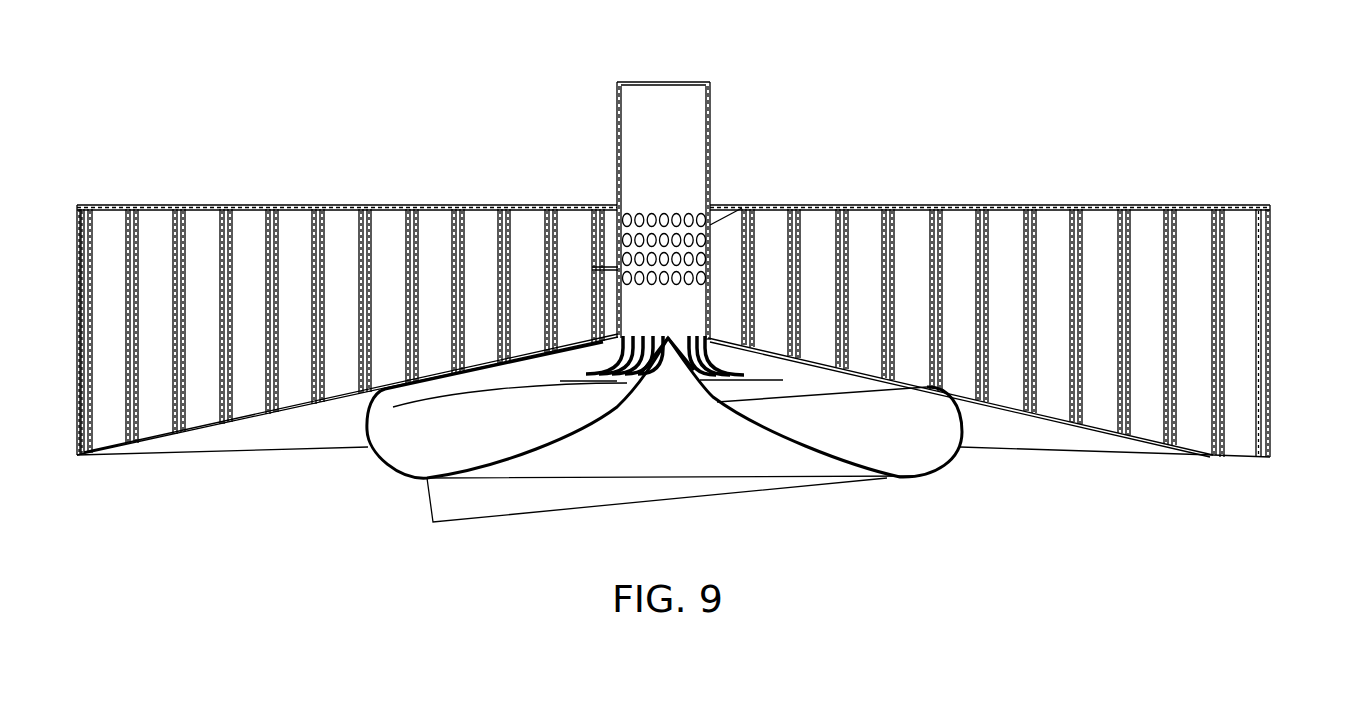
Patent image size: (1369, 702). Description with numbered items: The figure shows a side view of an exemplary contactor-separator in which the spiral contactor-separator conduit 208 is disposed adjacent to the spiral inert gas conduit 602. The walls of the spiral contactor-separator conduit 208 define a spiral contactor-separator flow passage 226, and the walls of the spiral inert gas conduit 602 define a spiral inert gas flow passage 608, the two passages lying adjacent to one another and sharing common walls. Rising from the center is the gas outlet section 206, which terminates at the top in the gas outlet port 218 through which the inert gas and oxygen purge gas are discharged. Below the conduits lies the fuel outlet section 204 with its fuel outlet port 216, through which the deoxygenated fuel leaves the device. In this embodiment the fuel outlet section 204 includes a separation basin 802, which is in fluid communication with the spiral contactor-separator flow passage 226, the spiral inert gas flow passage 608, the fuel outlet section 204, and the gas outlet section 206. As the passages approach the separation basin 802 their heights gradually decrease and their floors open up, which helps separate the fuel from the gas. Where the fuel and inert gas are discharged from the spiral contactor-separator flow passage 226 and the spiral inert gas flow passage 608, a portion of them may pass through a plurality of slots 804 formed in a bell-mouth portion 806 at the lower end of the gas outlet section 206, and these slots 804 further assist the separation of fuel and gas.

The fuel outlet section 204 is at (422, 541).
The gas outlet section 206 is at (708, 125).
The spiral contactor-separator conduit 208 is at (1197, 203).
The fuel outlet port 216 is at (428, 498).
The gas outlet port 218 is at (665, 91).
The spiral contactor-separator flow passage 226 is at (1234, 229).
The spiral inert gas conduit 602 is at (1276, 300).
The spiral inert gas flow passage 608 is at (1271, 416).
The separation basin 802 is at (937, 473).
The slots 804 is at (690, 366).
The bell-mouth portion 806 is at (746, 383).